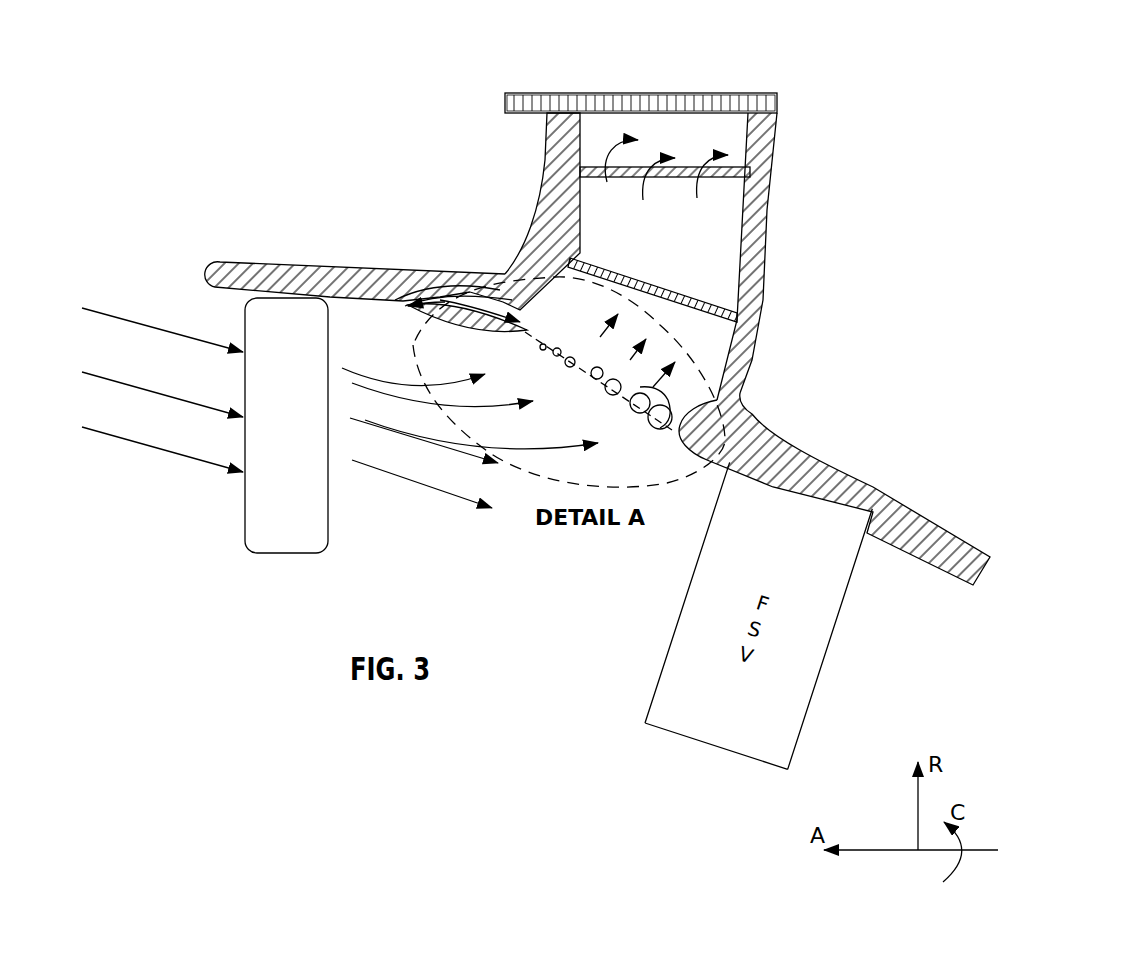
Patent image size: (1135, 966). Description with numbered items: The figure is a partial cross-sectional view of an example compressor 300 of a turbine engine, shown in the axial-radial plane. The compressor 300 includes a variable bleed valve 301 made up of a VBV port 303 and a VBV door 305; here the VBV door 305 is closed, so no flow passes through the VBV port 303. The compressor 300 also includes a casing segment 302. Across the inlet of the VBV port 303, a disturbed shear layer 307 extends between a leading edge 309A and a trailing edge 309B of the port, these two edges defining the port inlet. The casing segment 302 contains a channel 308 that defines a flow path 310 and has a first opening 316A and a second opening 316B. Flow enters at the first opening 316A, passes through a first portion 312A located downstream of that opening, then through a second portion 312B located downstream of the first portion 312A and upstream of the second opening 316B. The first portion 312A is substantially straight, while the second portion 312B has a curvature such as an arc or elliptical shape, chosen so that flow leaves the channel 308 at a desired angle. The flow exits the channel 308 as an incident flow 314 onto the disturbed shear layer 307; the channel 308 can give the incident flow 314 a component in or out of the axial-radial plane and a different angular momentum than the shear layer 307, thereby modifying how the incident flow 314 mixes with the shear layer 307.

The compressor 300 is at (225, 91).
The variable bleed valve 301 is at (793, 75).
The casing segment 302 is at (326, 265).
The VBV port 303 is at (805, 199).
The VBV door 305 is at (511, 92).
The disturbed shear layer 307 is at (688, 408).
The channel 308 is at (488, 305).
The leading edge 309A is at (508, 328).
The trailing edge 309B is at (682, 440).
The flow path 310 is at (421, 323).
The first portion 312A is at (410, 283).
The second portion 312B is at (477, 283).
The incident flow 314 is at (520, 327).
The first opening 316A is at (372, 308).
The second opening 316B is at (582, 278).